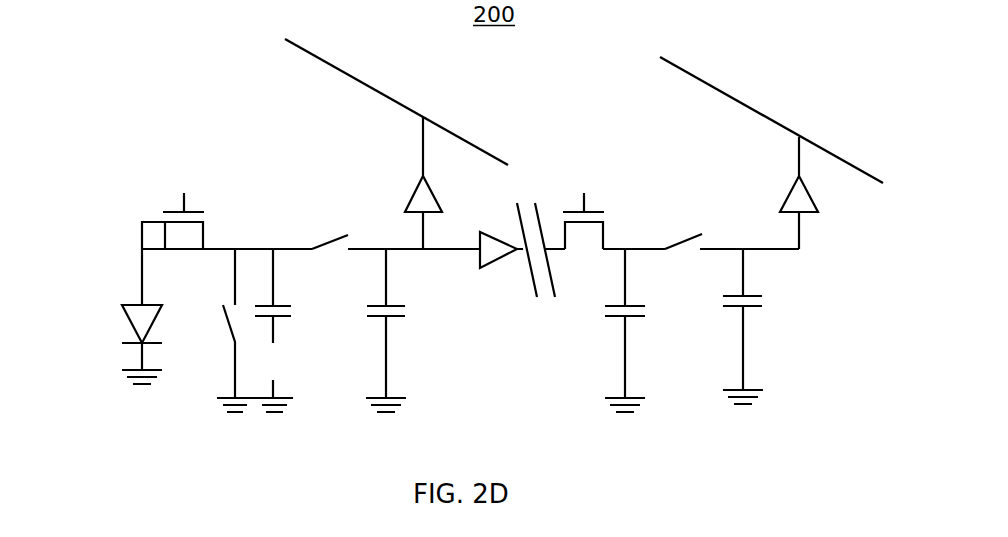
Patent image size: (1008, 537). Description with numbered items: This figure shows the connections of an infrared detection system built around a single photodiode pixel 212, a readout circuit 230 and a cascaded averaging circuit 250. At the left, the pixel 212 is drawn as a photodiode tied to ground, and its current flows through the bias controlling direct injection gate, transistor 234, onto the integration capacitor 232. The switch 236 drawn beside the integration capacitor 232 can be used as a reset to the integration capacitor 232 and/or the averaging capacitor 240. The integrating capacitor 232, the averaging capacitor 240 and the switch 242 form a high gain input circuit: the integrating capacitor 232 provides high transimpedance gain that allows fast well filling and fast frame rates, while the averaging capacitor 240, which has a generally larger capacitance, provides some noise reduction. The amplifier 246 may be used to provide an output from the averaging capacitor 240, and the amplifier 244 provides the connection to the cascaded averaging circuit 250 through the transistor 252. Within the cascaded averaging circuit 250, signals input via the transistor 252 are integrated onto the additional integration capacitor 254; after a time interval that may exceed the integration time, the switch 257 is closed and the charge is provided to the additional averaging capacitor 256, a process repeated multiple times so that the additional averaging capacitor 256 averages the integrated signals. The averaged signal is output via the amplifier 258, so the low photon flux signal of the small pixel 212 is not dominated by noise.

The pixel 212 is at (108, 325).
The readout circuit 230 is at (253, 153).
The integration capacitor 232 is at (298, 312).
The transistor 234 is at (135, 230).
The switch 236 is at (215, 328).
The averaging capacitor 240 is at (412, 330).
The switch 242 is at (330, 220).
The amplifier 244 is at (478, 288).
The amplifier 246 is at (398, 202).
The cascaded averaging circuit 250 is at (580, 98).
The transistor 252 is at (578, 192).
The additional integration capacitor 254 is at (660, 307).
The additional averaging capacitor 256 is at (768, 320).
The switch 257 is at (692, 222).
The amplifier 258 is at (753, 193).